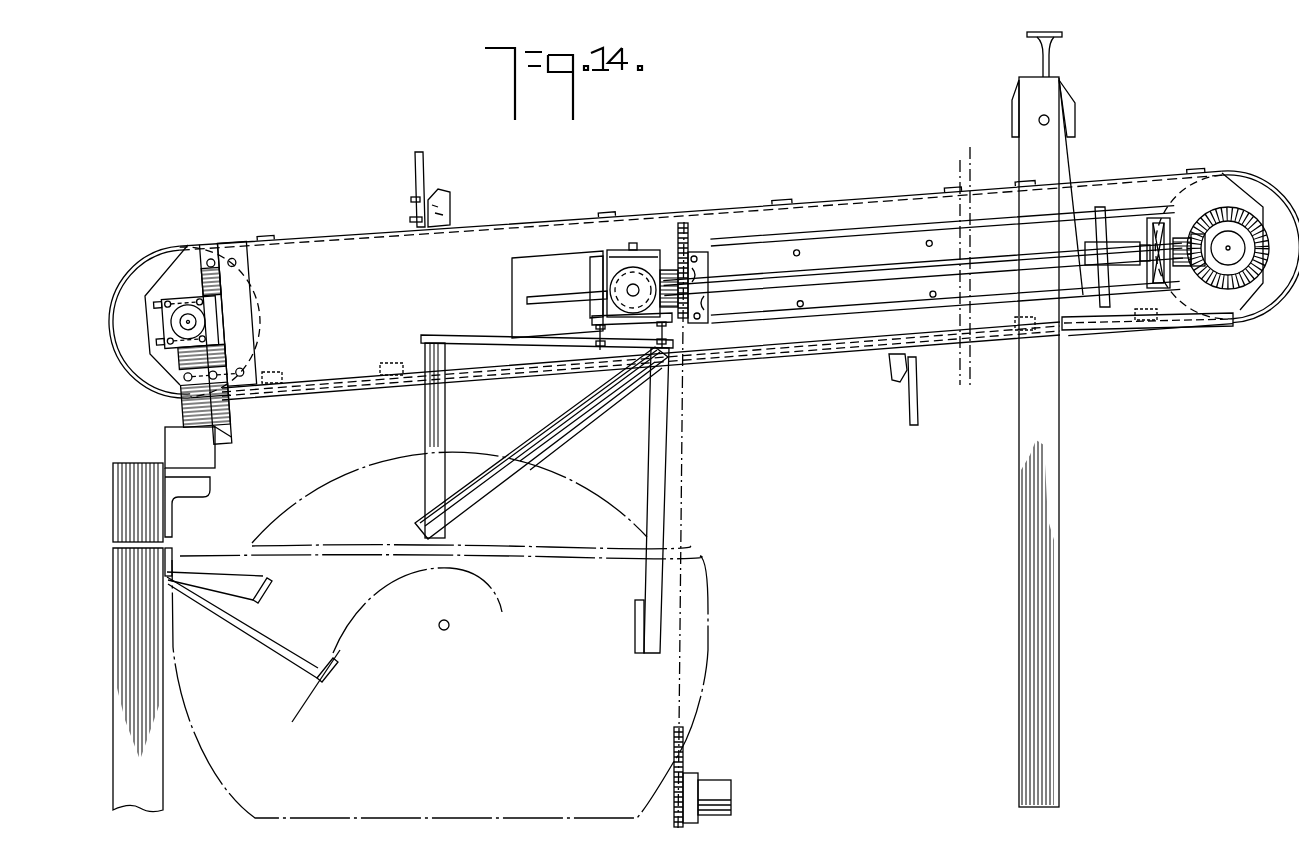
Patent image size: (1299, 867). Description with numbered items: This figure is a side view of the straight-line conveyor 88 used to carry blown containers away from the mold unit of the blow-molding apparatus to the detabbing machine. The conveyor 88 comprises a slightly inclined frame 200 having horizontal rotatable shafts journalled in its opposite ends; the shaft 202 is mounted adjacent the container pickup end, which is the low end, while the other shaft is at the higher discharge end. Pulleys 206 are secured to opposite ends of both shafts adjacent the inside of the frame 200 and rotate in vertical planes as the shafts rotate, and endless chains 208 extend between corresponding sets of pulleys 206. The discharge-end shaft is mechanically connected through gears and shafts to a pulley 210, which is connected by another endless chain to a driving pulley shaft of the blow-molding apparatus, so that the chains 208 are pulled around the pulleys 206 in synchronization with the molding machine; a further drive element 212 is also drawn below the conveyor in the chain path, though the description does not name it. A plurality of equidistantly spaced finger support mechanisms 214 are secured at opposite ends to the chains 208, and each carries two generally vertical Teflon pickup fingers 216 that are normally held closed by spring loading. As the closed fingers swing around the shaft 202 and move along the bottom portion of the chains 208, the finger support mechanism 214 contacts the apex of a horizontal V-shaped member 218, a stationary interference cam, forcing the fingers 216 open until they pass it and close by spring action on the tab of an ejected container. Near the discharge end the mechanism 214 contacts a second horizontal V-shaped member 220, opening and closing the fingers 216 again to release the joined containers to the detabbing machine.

The conveyor 88 is at (727, 346).
The frame 200 is at (242, 247).
The shaft 202 is at (200, 322).
The pulleys 206 is at (163, 258).
The endless chains 208 is at (985, 348).
The pulley 210 is at (687, 230).
The driven sprocket 212 is at (684, 758).
The finger support mechanisms 214 is at (450, 211).
The pickup fingers 216 is at (425, 164).
The V-shaped member 218 is at (342, 377).
The second V-shaped member 220 is at (1103, 344).